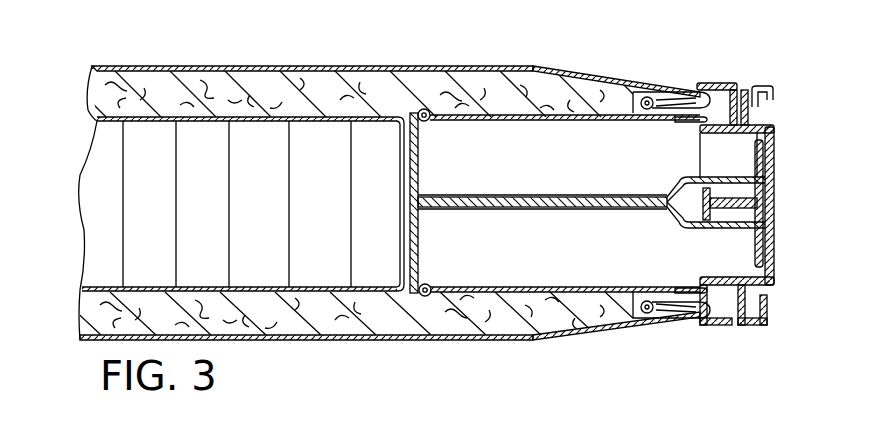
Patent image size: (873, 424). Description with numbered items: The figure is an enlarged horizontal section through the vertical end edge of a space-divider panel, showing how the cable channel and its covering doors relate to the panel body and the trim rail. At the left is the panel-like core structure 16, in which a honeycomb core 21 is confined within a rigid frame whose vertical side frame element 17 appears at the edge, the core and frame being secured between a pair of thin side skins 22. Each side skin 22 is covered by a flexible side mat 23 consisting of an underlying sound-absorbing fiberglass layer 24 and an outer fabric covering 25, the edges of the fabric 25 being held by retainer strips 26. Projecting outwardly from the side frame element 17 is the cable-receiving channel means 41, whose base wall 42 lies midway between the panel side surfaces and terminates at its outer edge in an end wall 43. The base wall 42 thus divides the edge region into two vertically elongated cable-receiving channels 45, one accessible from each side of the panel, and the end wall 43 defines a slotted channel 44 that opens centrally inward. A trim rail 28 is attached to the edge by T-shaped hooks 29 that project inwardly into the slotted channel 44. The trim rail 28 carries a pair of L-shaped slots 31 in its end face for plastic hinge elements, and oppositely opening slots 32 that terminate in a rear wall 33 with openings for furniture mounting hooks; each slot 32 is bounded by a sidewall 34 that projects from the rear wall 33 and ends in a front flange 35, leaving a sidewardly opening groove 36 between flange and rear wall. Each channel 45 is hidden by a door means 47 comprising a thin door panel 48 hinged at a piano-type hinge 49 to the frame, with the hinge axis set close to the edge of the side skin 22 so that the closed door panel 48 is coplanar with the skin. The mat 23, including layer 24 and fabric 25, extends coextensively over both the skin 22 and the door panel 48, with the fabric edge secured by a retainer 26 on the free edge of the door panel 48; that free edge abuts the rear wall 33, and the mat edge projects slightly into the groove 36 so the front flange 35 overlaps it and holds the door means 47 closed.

The panel-like core structure 16 is at (147, 112).
The side frame element 17 is at (298, 115).
The core 21 is at (120, 188).
The side skin 22 is at (208, 116).
The side mat 23 is at (383, 65).
The flexible layer 24 is at (310, 96).
The fabric covering layer 25 is at (172, 66).
The retainer strip 26 is at (664, 92).
The trim rail 28 is at (776, 135).
The hook 29 is at (748, 197).
The L-shaped slot 31 is at (772, 125).
The slot 32 is at (771, 92).
The rear wall 33 is at (728, 155).
The sidewall 34 is at (744, 100).
The front flange 35 is at (718, 84).
The groove 36 is at (699, 130).
The cable-receiving channel means 41 is at (661, 229).
The base wall 42 is at (492, 210).
The end wall 43 is at (774, 256).
The slotted channel 44 is at (742, 224).
The cable-receiving channel 45 is at (498, 133).
The door means 47 is at (577, 76).
The door panel 48 is at (607, 121).
The hinge 49 is at (430, 121).